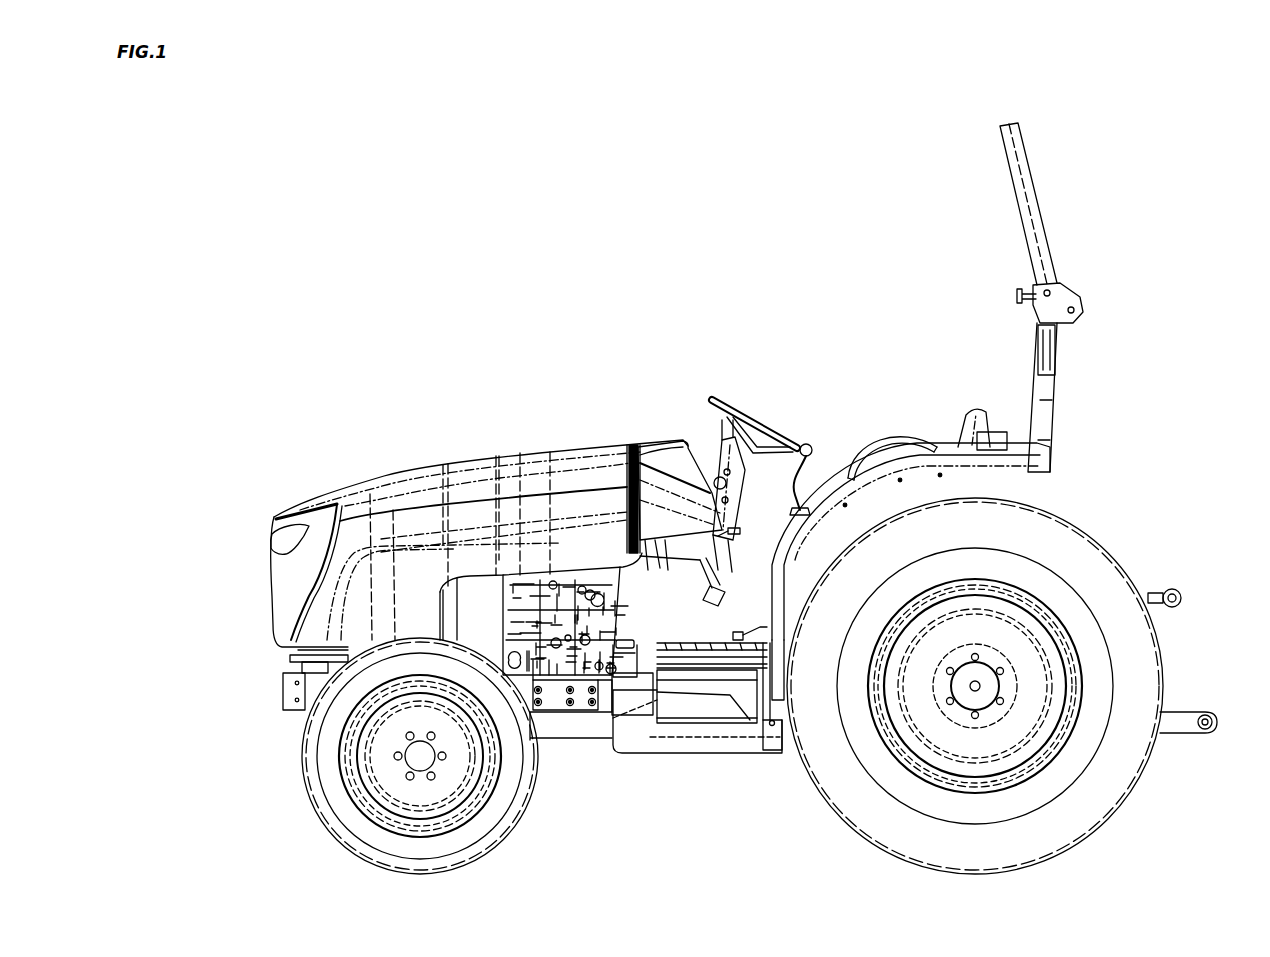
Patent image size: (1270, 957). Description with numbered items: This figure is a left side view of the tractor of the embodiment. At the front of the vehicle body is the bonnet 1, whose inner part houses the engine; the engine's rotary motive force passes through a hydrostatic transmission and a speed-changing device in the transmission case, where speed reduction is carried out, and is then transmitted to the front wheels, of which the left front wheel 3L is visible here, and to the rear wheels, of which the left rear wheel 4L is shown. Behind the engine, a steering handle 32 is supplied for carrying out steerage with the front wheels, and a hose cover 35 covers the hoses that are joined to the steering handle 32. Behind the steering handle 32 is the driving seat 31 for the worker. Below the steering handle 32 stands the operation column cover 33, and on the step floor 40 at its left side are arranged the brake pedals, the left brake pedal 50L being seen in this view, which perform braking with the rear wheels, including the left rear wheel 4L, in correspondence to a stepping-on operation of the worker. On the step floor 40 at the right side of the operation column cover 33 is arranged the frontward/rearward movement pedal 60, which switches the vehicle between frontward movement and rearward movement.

The bonnet 1 is at (443, 463).
The step floor 40 is at (637, 552).
The steering handle 32 is at (756, 417).
The operation column cover 33 is at (740, 500).
The hose cover 35 is at (718, 550).
The brake pedal 50L is at (720, 590).
The frontward/rearward movement pedal 60 is at (737, 631).
The driving seat 31 is at (966, 420).
The left rear wheel 4L is at (1092, 512).
The left front wheel 3L is at (296, 746).